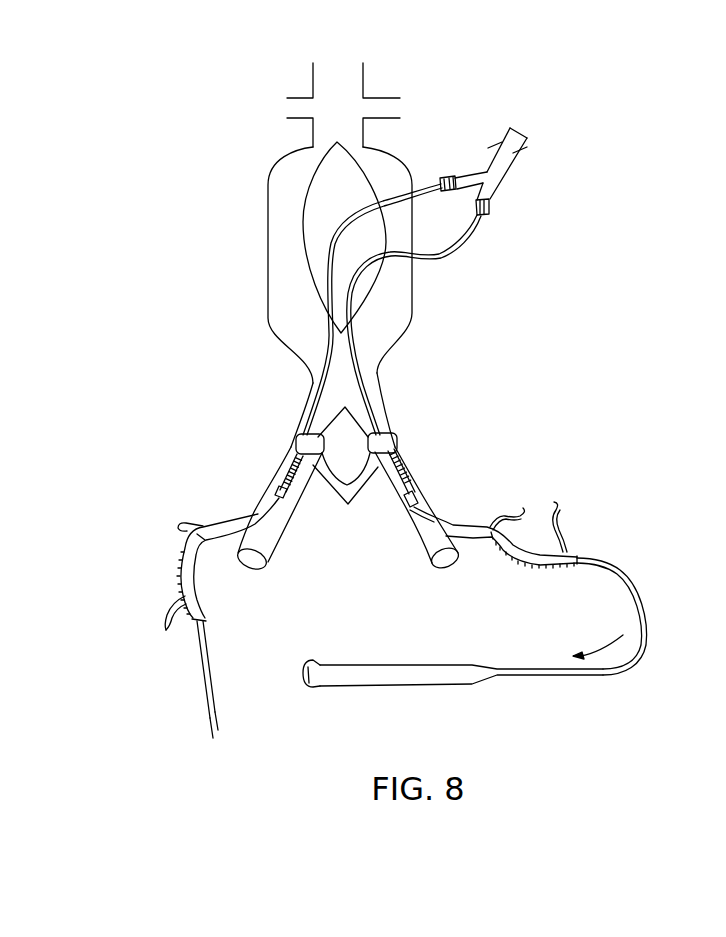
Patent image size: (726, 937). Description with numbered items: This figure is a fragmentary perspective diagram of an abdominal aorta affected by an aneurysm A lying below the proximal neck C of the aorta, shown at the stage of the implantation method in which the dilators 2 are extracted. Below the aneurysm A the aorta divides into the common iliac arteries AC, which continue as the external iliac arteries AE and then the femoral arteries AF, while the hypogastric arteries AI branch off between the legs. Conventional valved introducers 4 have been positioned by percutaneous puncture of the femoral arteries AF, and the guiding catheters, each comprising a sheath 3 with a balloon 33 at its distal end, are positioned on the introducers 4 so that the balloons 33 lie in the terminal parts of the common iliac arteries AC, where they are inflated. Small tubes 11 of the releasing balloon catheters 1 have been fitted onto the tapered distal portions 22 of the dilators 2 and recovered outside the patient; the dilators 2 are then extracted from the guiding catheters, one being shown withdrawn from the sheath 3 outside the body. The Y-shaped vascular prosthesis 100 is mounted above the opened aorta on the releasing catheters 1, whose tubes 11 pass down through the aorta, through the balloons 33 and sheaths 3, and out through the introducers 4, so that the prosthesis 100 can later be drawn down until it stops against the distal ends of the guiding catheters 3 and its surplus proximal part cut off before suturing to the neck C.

The releasing balloon catheter 1 is at (418, 172).
The vascular prosthesis 100 is at (515, 177).
The small tube 11 is at (347, 221).
The balloon 33 is at (297, 437).
The introducer 4 is at (279, 535).
The sheath 3 is at (172, 575).
The dilator 2 is at (199, 713).
The distal portion 22 is at (218, 727).
The aneurysm A is at (268, 270).
The proximal neck C is at (313, 136).
The common iliac artery AC is at (307, 420).
The external iliac artery AE is at (277, 473).
The hypogastric arteries AI is at (348, 505).
The femoral artery AF is at (256, 519).